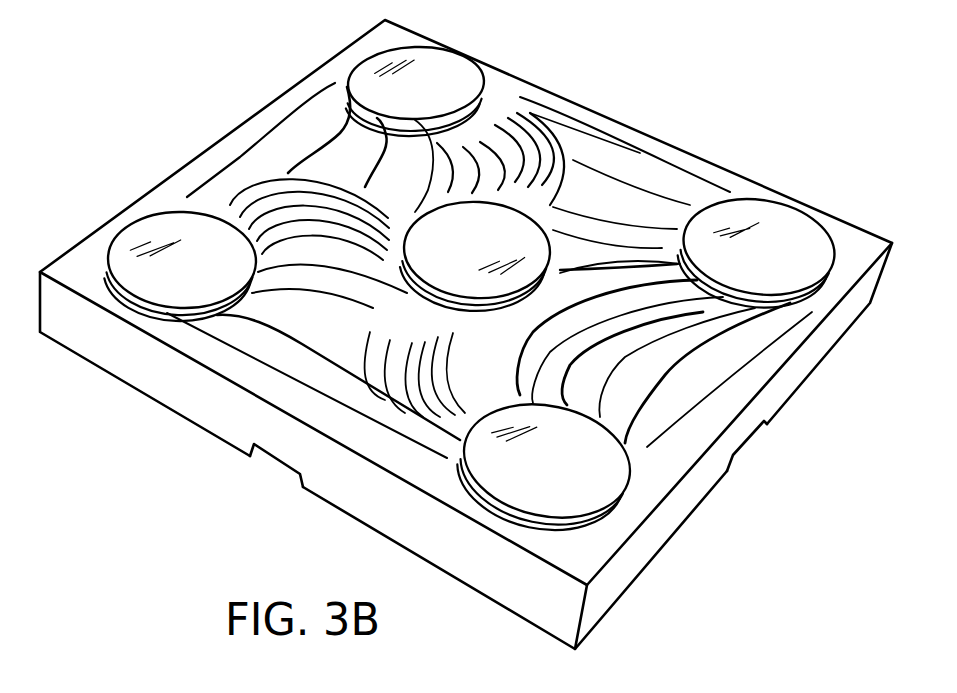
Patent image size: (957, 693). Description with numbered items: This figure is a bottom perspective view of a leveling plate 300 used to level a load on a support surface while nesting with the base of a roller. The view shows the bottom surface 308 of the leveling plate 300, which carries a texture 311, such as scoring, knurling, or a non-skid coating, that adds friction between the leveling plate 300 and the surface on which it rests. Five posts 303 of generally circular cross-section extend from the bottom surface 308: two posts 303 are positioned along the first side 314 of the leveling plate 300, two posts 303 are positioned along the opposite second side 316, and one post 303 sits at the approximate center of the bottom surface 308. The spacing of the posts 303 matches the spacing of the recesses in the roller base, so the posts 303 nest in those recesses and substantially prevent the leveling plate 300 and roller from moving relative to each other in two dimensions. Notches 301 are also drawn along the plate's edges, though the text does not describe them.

The leveling plate 300 is at (632, 115).
The notch 301 is at (280, 463).
The posts 303 is at (182, 228).
The bottom surface 308 is at (354, 338).
The texture 311 is at (662, 182).
The first side 314 is at (493, 575).
The second side 316 is at (563, 97).